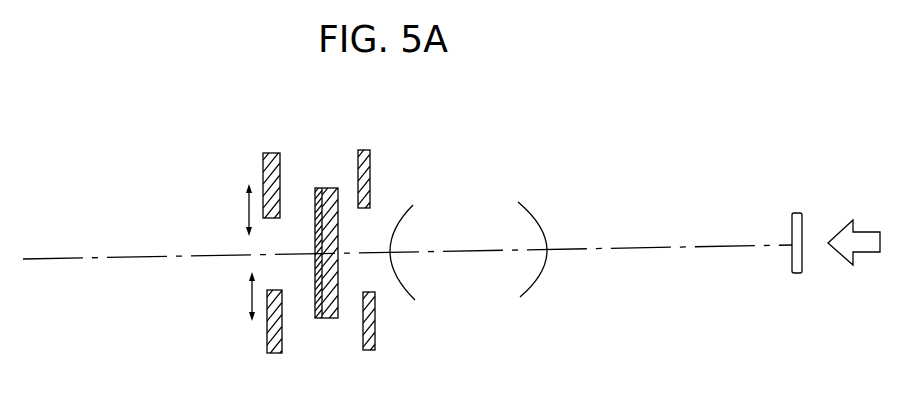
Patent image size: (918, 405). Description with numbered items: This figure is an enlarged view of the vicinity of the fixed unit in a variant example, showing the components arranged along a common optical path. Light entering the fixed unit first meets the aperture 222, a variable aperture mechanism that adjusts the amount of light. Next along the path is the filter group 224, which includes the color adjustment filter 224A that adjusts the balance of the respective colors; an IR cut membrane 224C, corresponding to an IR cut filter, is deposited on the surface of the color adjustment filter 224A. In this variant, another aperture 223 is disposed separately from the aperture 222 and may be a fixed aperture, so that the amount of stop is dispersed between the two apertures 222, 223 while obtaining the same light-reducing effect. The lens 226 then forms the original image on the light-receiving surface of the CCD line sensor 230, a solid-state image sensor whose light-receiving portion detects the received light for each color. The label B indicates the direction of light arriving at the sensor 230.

The aperture 222 is at (263, 167).
The aperture 223 is at (375, 318).
The filter group 224 is at (353, 241).
The color adjustment filter 224A is at (327, 187).
The IR cut membrane 224C is at (318, 305).
The lens 226 is at (480, 184).
The CCD line sensor 230 is at (797, 212).
The incident beam direction B is at (863, 230).